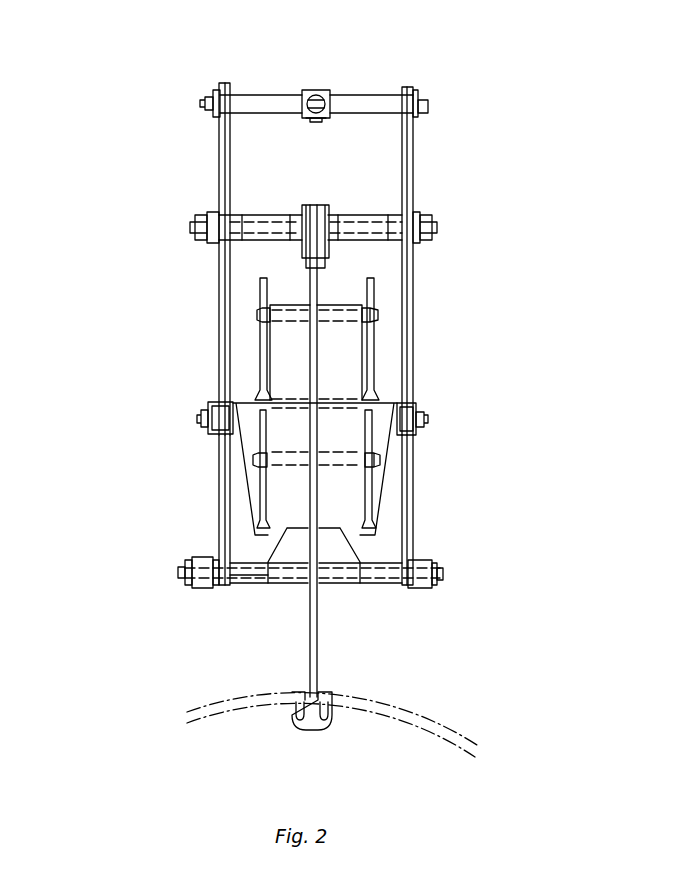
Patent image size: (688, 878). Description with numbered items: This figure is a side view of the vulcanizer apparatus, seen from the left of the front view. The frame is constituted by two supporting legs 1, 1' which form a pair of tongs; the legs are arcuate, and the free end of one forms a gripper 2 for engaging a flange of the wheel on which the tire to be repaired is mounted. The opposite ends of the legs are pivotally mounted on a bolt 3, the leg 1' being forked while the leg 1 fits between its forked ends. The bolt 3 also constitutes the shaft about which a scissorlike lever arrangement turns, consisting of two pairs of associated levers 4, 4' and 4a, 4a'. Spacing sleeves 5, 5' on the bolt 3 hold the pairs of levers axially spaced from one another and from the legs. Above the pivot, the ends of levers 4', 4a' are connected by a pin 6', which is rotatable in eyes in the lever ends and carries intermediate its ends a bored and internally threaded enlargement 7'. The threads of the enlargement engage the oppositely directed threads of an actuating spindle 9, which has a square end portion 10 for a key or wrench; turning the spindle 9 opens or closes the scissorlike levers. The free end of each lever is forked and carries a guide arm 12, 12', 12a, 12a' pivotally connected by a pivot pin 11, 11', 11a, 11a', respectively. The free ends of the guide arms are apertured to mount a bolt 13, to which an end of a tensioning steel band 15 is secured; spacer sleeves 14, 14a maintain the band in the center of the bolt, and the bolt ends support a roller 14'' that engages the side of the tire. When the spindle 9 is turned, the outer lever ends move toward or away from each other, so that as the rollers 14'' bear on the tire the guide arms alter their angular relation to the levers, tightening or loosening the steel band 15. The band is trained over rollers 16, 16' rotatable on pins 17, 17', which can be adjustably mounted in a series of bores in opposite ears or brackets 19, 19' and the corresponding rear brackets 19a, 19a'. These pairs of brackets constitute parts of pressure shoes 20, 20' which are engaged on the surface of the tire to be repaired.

The supporting leg 1 is at (327, 451).
The supporting leg 1' is at (335, 236).
The gripper 2 is at (315, 730).
The bolt 3 is at (267, 227).
The lever 4 is at (458, 261).
The lever 4' is at (463, 261).
The lever 4a is at (202, 259).
The lever 4a' is at (198, 259).
The spacing sleeve 5 is at (266, 202).
The spacing sleeve 5' is at (363, 202).
The pin 6' is at (314, 67).
The bored and internally threaded enlargement 7' is at (338, 64).
The actuating spindle 9 is at (313, 100).
The square end portion 10 is at (317, 112).
The pivot pin 11 is at (429, 425).
The pivot pin 11' is at (471, 409).
The pivot pin 11a is at (195, 427).
The pivot pin 11a' is at (150, 402).
The guide arm 12 is at (430, 510).
The guide arm 12' is at (434, 510).
The guide arm 12a is at (199, 510).
The guide arm 12a' is at (192, 510).
The bolt 13 is at (383, 583).
The spacer sleeve 14 is at (316, 617).
The spacer sleeve 14a is at (242, 583).
The roller 14'' is at (280, 595).
The tensioning steel band 15 is at (350, 350).
The roller 16 is at (406, 464).
The roller 16' is at (405, 308).
The pin 17 is at (221, 461).
The pin 17' is at (218, 305).
The bracket 19 is at (406, 469).
The bracket 19' is at (410, 339).
The bracket 19a is at (265, 469).
The bracket 19a' is at (222, 339).
The pressure shoe 20 is at (362, 555).
The pressure shoe 20' is at (352, 452).